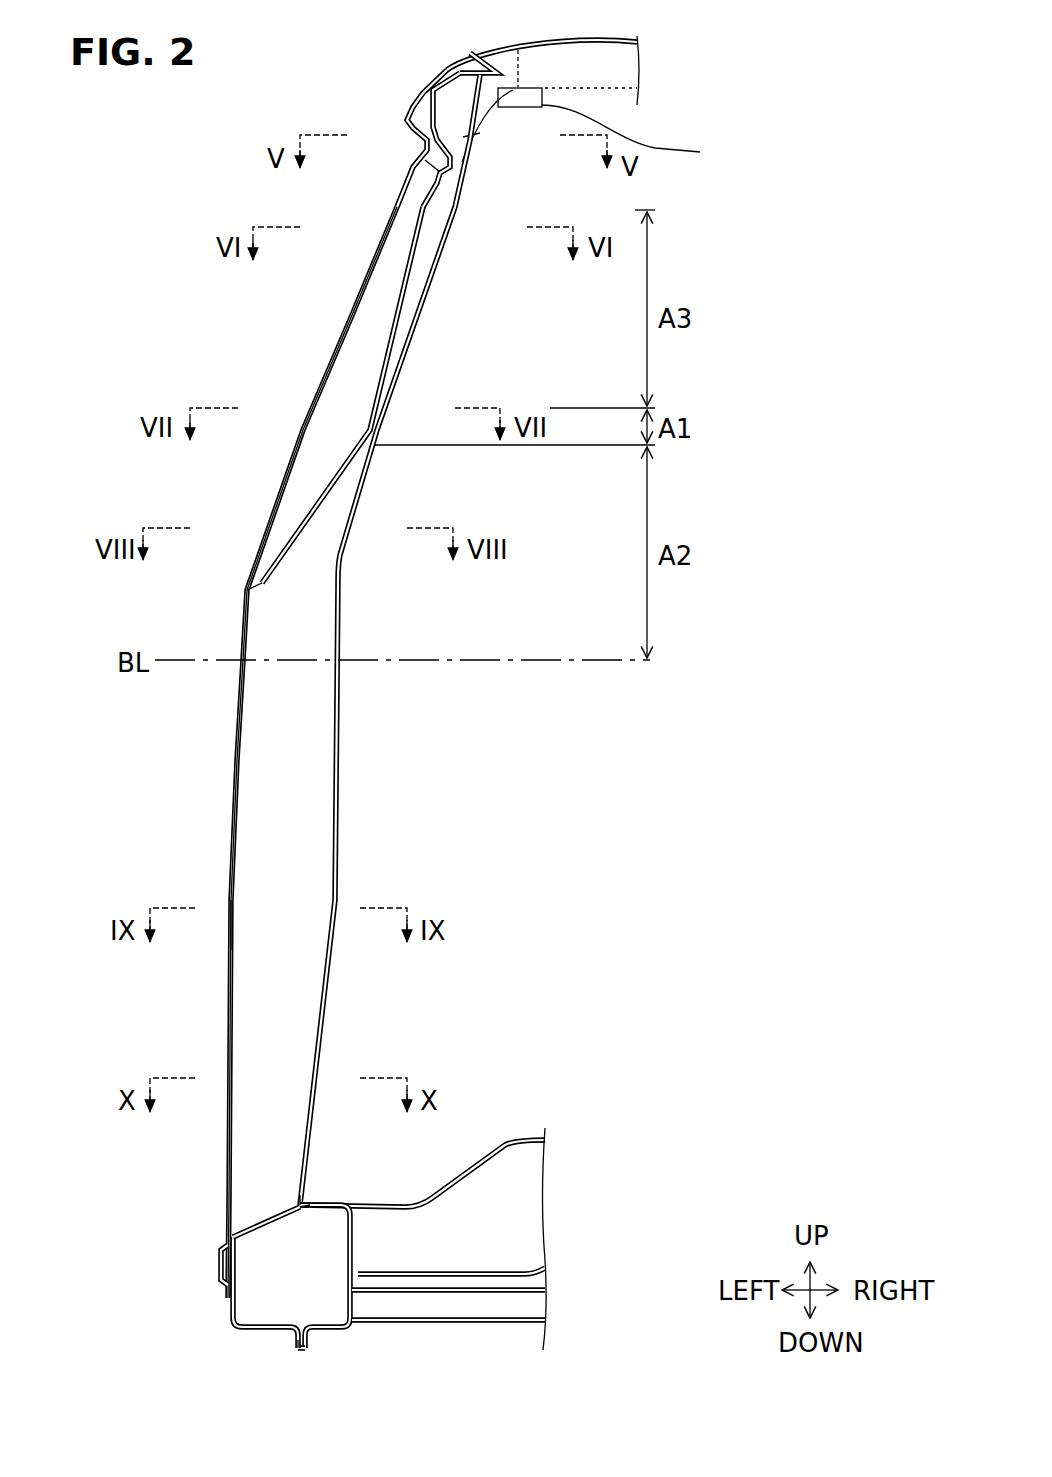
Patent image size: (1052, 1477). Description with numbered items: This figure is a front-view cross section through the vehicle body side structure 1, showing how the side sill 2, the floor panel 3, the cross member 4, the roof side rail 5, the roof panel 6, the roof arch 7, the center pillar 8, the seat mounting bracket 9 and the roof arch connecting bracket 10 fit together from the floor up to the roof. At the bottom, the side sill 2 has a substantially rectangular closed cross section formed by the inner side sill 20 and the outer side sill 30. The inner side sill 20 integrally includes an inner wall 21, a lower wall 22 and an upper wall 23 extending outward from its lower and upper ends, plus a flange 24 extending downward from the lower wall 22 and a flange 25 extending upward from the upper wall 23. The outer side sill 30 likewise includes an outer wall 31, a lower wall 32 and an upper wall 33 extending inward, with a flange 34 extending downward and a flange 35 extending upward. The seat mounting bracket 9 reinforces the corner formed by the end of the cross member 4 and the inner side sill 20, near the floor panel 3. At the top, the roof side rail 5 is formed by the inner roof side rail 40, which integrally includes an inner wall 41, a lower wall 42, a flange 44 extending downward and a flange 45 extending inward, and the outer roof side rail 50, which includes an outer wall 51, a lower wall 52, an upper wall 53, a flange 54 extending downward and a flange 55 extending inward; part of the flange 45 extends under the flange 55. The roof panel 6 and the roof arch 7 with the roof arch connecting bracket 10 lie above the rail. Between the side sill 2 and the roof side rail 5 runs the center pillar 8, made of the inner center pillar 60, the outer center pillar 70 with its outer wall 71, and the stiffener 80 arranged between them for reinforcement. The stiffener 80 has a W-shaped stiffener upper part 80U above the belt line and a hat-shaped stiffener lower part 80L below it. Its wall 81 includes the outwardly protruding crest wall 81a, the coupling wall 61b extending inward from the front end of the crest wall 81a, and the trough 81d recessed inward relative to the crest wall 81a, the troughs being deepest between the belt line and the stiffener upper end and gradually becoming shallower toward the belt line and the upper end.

The vehicle body side structure 1 is at (140, 300).
The side sill 2 is at (135, 1308).
The floor panel 3 is at (530, 1315).
The cross member 4 is at (530, 1280).
The roof side rail 5 is at (298, 100).
The roof panel 6 is at (540, 43).
The roof arch 7 is at (620, 107).
The center pillar 8 is at (483, 690).
The seat mounting bracket 9 is at (510, 1142).
The roof arch connecting bracket 10 is at (637, 137).
The inner side sill 20 is at (440, 1335).
The inner wall 21 is at (352, 1258).
The lower wall 22 is at (335, 1330).
The upper wall 23 is at (318, 1202).
The flange 24 is at (306, 1350).
The flange 25 is at (307, 1200).
The outer side sill 30 is at (195, 1265).
The outer wall 31 is at (232, 1303).
The lower wall 32 is at (265, 1333).
The upper wall 33 is at (247, 1213).
The flange 34 is at (296, 1350).
The flange 35 is at (300, 1207).
The inner roof side rail 40 is at (505, 237).
The inner wall 41 is at (477, 135).
The lower wall 42 is at (463, 168).
The flange 44 is at (438, 187).
The flange 45 is at (532, 90).
The outer roof side rail 50 is at (378, 70).
The outer wall 51 is at (423, 93).
The lower wall 52 is at (407, 120).
The upper wall 53 is at (472, 57).
The flange 54 is at (427, 158).
The flange 55 is at (518, 50).
The inner center pillar 60 is at (430, 745).
The coupling wall 61b is at (340, 787).
The outer center pillar 70 is at (155, 828).
The outer wall 71 is at (309, 752).
The stiffener 80 is at (262, 812).
The stiffener upper part 80U is at (288, 575).
The stiffener lower part 80L is at (248, 905).
The wall 81 is at (244, 727).
The crest wall 81a is at (232, 788).
The trough 81d is at (392, 347).